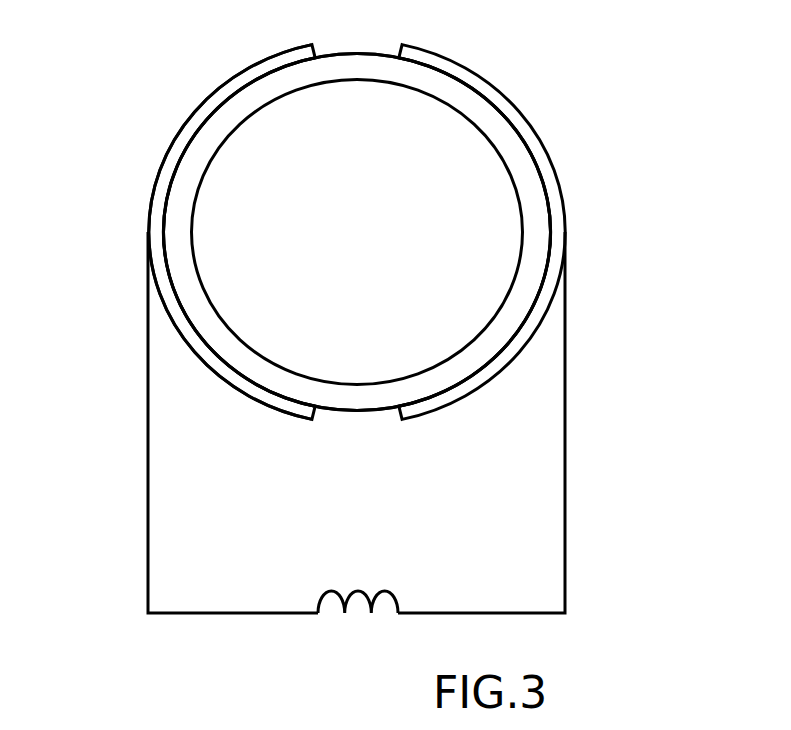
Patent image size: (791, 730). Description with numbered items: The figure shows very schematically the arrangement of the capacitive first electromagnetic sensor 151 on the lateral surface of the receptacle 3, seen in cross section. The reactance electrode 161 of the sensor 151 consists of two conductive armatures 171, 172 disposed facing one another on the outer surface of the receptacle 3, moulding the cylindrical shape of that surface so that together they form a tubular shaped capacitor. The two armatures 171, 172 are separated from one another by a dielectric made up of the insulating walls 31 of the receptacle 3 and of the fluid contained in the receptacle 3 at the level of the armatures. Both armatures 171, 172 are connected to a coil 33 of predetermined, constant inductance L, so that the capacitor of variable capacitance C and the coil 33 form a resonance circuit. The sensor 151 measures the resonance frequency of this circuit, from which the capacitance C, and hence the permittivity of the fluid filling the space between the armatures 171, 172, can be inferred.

The receptacle 3 is at (350, 416).
The insulating walls 31 is at (535, 273).
The coil 33 is at (330, 620).
The first electromagnetic sensor 151 is at (634, 66).
The reactance electrode 161 is at (235, 61).
The conductive armature 171 is at (556, 163).
The conductive armature 172 is at (160, 167).